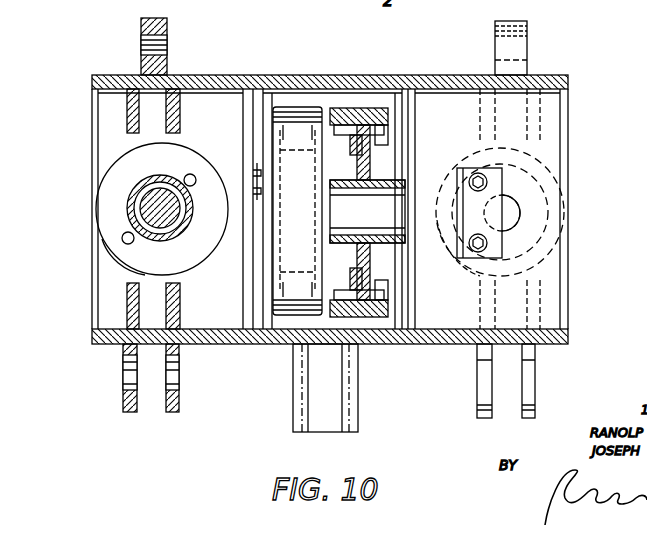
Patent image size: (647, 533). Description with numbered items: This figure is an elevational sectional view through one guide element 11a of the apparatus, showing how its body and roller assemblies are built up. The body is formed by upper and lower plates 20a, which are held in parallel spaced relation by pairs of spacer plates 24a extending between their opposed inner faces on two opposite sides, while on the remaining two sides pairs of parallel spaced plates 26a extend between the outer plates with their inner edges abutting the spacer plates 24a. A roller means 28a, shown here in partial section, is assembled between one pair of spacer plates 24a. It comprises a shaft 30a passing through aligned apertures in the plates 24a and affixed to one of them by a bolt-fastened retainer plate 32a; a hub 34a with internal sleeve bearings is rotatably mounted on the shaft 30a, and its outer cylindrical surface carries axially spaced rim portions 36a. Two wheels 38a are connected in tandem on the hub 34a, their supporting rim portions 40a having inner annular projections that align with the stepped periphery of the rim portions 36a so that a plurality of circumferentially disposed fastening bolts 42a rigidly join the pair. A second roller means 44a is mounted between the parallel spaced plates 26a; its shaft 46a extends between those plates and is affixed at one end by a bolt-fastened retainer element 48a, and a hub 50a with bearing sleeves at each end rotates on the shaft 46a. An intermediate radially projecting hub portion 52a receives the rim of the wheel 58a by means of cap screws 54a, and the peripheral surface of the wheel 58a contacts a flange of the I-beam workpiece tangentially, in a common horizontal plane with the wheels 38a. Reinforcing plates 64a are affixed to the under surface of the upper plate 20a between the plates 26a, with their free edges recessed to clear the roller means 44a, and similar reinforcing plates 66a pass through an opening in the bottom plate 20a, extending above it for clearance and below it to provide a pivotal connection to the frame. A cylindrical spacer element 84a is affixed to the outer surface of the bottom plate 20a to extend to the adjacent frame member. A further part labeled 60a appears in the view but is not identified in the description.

The guide element 11a is at (245, 72).
The upper and lower plates 20a is at (568, 85).
The spacer plates 24a is at (268, 343).
The parallel spaced plates 26a is at (102, 304).
The roller means 28a is at (296, 108).
The shaft 30a is at (367, 211).
The retainer plate 32a is at (244, 200).
The hub 34a is at (372, 185).
The rim portions 36a is at (288, 160).
The wheels 38a is at (345, 108).
The supporting rim portions 40a is at (366, 108).
The fastening bolts 42a is at (360, 128).
The roller means 44a is at (128, 262).
The shaft 46a is at (513, 213).
The retainer element 48a is at (524, 215).
The hub 50a is at (125, 190).
The radially projecting hub portion 52a is at (118, 204).
The cap screws 54a is at (122, 236).
The wheel 58a is at (122, 253).
The post 60a is at (145, 25).
The reinforcing plates 64a is at (170, 110).
The reinforcing plates 66a is at (125, 400).
The cylindrical spacer element 84a is at (298, 402).